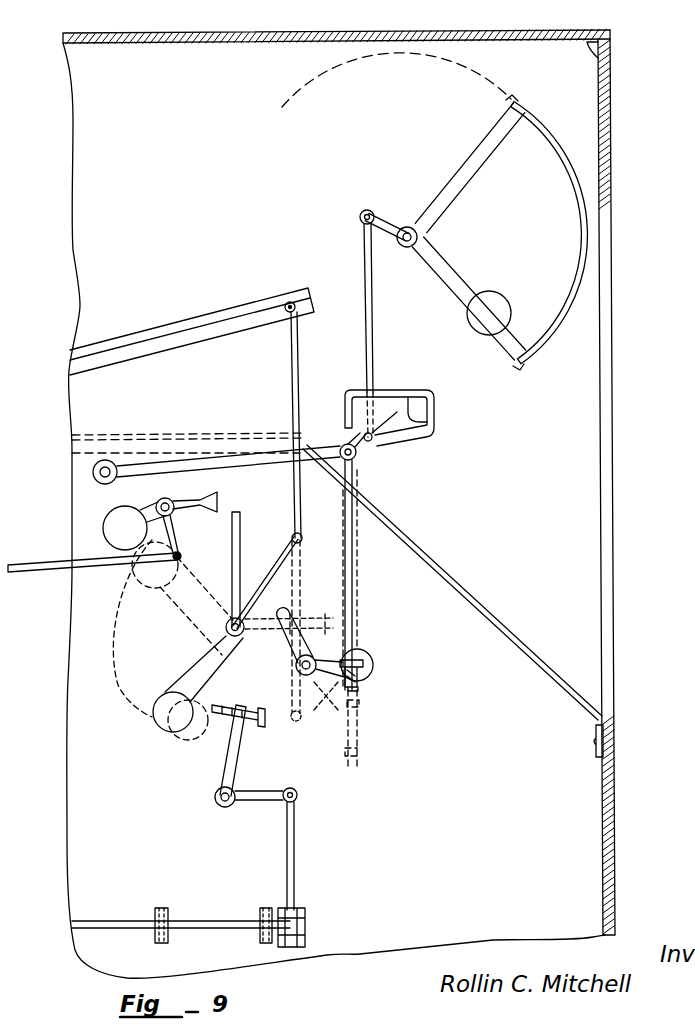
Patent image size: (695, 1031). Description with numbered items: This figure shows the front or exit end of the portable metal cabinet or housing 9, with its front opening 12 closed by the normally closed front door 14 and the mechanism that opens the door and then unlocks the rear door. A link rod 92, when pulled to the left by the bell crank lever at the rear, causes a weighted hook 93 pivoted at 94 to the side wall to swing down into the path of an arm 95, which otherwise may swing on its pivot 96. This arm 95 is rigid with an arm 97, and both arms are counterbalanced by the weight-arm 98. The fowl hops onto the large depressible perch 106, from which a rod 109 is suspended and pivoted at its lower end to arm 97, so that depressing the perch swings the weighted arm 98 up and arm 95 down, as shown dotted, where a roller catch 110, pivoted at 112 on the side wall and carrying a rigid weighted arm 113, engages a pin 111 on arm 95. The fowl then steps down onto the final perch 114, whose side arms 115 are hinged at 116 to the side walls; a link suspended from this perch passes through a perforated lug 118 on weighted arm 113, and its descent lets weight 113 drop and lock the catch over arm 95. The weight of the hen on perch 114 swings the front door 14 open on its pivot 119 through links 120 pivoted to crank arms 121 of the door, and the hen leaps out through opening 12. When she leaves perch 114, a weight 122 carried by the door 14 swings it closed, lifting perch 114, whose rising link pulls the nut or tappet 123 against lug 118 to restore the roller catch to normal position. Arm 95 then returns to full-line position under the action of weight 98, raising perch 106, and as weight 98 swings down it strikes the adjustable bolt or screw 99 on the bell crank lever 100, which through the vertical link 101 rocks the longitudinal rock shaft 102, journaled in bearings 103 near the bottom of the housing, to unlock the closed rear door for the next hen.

The cabinet or housing 9 is at (318, 36).
The front opening 12 is at (611, 456).
The front door 14 is at (585, 243).
The link rod 92 is at (40, 562).
The weighted hook 93 is at (232, 500).
The pivot 94 is at (180, 497).
The arm 95 is at (230, 545).
The pivot 96 is at (226, 628).
The arm 97 is at (300, 575).
The weight-arm 98 is at (160, 722).
The adjustable bolt or screw 99 is at (240, 725).
The bell crank lever 100 is at (246, 770).
The vertical link 101 is at (295, 815).
The rock shaft 102 is at (215, 906).
The bearings 103 is at (160, 942).
The depressible perch 106 is at (222, 330).
The rod 109 is at (315, 355).
The catch 110 is at (294, 645).
The pin 111 is at (228, 545).
The pivot 112 is at (326, 650).
The weighted arm 113 is at (370, 651).
The final perch 114 is at (435, 430).
The side arms 115 is at (235, 462).
The hinge 116 is at (93, 474).
The perforated lug 118 is at (372, 672).
The pivot 119 is at (408, 250).
The link 120 is at (364, 250).
The crank arm 121 is at (385, 216).
The weight 122 is at (487, 306).
The nut or tappet 123 is at (358, 691).